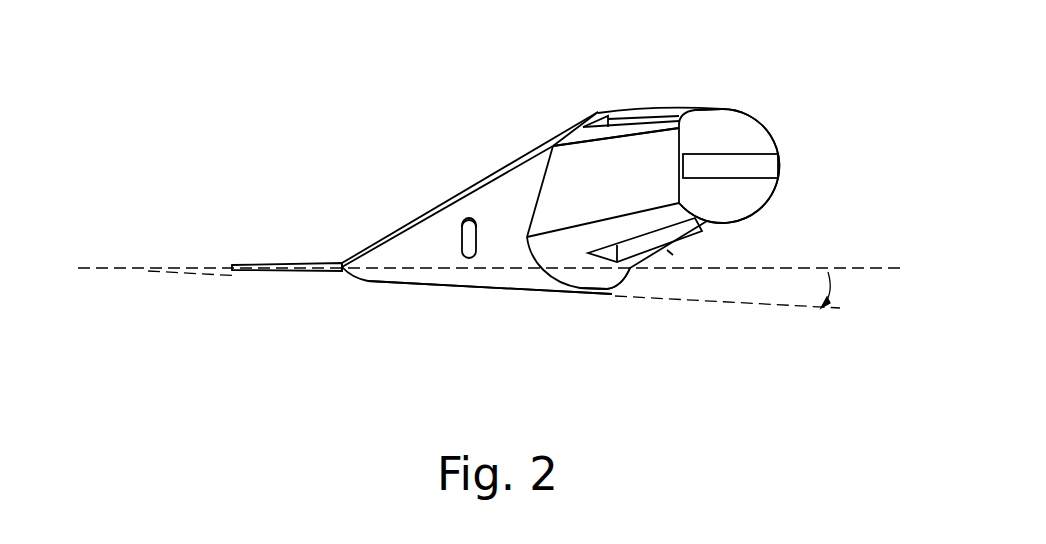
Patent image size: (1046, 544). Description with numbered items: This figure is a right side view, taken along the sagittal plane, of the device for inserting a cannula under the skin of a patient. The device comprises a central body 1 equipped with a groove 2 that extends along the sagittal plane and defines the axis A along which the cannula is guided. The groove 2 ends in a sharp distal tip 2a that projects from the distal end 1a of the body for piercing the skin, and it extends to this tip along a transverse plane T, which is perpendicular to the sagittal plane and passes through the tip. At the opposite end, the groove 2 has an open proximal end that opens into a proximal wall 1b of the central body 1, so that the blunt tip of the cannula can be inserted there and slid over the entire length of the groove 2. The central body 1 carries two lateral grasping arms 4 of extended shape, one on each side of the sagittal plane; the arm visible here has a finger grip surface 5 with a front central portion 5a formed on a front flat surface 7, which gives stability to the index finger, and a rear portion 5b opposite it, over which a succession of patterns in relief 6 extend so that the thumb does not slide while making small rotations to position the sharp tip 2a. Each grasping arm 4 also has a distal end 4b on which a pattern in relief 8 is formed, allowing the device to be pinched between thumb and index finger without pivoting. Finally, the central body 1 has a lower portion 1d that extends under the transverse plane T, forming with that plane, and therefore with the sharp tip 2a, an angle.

The central body 1 is at (470, 192).
The distal end 1a is at (346, 273).
The proximal wall 1b is at (615, 288).
The lower portion 1d is at (533, 288).
The groove 2 is at (287, 220).
The sharp distal tip 2a is at (252, 263).
The lateral grasping arm 4 is at (746, 123).
The distal end of grasping arm 4b is at (737, 117).
The finger grip surface 5 is at (645, 73).
The front central portion 5a is at (608, 104).
The rear portion 5b is at (635, 112).
The patterns in relief 6 is at (702, 222).
The front flat surface 7 is at (562, 160).
The pattern in relief 8 is at (779, 165).
The axis of the groove A is at (98, 267).
The transverse plane T is at (859, 268).